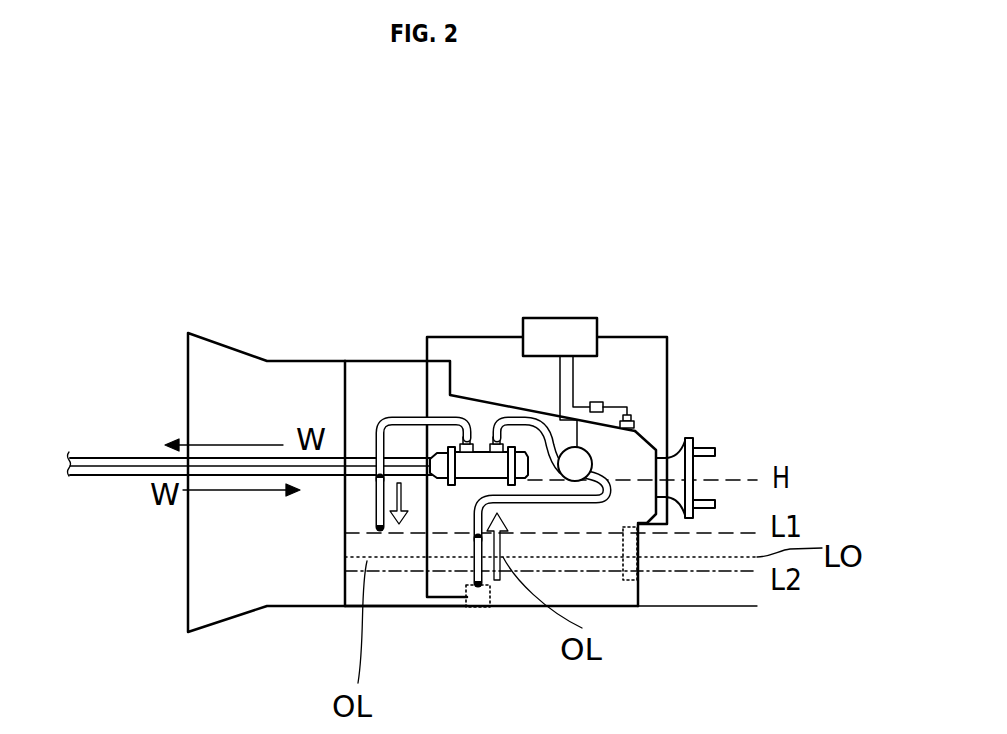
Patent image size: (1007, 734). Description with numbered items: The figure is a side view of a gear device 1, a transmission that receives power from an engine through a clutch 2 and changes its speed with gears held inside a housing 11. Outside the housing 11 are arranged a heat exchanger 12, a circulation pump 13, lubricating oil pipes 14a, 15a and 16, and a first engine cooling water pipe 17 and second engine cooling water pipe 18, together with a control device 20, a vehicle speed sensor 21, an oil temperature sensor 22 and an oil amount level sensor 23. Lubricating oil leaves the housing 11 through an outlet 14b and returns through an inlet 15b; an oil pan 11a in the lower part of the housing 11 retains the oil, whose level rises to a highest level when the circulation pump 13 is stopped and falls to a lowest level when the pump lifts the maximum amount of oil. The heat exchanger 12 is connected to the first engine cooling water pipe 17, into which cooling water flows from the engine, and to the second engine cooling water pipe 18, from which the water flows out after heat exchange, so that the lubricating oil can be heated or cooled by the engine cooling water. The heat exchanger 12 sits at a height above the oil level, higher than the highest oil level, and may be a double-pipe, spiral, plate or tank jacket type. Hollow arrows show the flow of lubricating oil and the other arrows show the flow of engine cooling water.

The gear device 1 is at (721, 333).
The clutch 2 is at (212, 587).
The housing 11 is at (412, 390).
The oil pan 11a is at (412, 588).
The heat exchanger 12 is at (483, 458).
The circulation pump 13 is at (583, 466).
The lubricating oil pipe 14a is at (528, 500).
The outlet 14b is at (480, 585).
The lubricating oil pipe 15a is at (398, 415).
The inlet 15b is at (376, 520).
The lubricating oil pipe 16 is at (500, 420).
The first engine cooling water pipe 17 is at (118, 477).
The second engine cooling water pipe 18 is at (127, 457).
The control device 20 is at (547, 318).
The vehicle speed sensor 21 is at (623, 415).
The oil temperature sensor 22 is at (478, 590).
The oil amount level sensor 23 is at (640, 581).